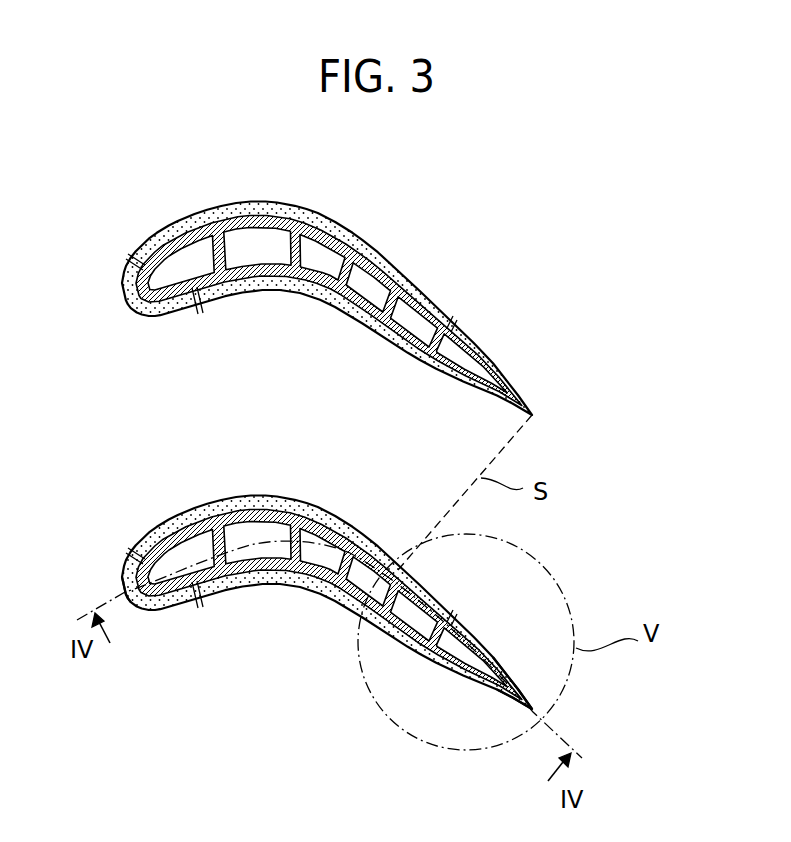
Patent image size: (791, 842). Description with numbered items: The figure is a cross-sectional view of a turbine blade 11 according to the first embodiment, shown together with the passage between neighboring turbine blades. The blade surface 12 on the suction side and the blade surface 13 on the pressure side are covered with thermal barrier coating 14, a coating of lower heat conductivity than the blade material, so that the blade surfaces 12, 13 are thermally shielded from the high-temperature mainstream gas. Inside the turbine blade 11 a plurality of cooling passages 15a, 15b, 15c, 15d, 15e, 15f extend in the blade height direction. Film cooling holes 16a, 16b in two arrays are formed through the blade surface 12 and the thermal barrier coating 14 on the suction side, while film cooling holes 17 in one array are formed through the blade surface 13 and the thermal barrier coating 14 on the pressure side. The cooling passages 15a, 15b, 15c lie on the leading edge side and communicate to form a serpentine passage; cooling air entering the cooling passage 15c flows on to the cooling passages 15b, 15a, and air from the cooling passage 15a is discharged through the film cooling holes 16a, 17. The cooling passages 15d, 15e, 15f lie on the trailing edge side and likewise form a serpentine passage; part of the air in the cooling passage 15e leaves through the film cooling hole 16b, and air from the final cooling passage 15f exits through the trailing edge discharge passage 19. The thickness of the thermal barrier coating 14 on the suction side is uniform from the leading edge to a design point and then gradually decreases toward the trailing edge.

The turbine blade 11 is at (126, 242).
The blade surface on suction side 12 is at (384, 552).
The blade surface on pressure side 13 is at (247, 582).
The thermal barrier coating 14 is at (157, 610).
The cooling passage 15a is at (183, 545).
The cooling passage 15b is at (252, 527).
The cooling passage 15c is at (333, 535).
The cooling passage 15d is at (347, 602).
The cooling passage 15e is at (410, 632).
The cooling passage 15f is at (458, 653).
The film cooling holes 16a is at (130, 548).
The film cooling holes 16b is at (443, 605).
The film cooling holes 17 is at (198, 605).
The trailing edge discharge passage 19 is at (500, 655).